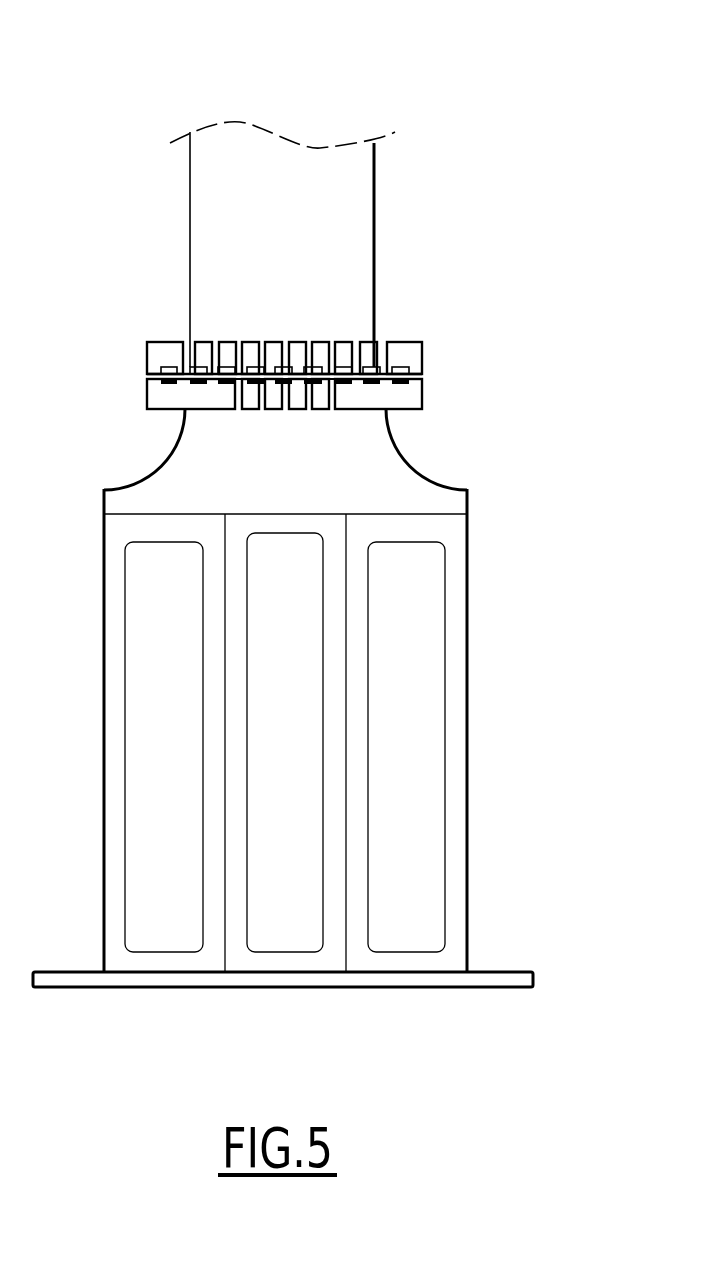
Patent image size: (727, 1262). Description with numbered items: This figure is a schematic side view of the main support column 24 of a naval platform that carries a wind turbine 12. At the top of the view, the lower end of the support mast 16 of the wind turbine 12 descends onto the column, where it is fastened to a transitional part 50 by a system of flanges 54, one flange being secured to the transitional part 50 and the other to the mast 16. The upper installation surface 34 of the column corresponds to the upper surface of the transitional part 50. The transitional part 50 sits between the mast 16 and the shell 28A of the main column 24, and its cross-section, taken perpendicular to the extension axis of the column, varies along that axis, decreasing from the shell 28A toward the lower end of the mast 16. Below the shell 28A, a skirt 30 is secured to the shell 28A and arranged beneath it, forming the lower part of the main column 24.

The wind turbine 12 is at (351, 104).
The support mast 16 is at (375, 225).
The system of flanges 54 is at (125, 352).
The upper installation surface 34 is at (403, 383).
The transitional part 50 is at (436, 460).
The main support column 24 is at (506, 669).
The shell 28A is at (467, 808).
The skirt 30 is at (500, 1007).